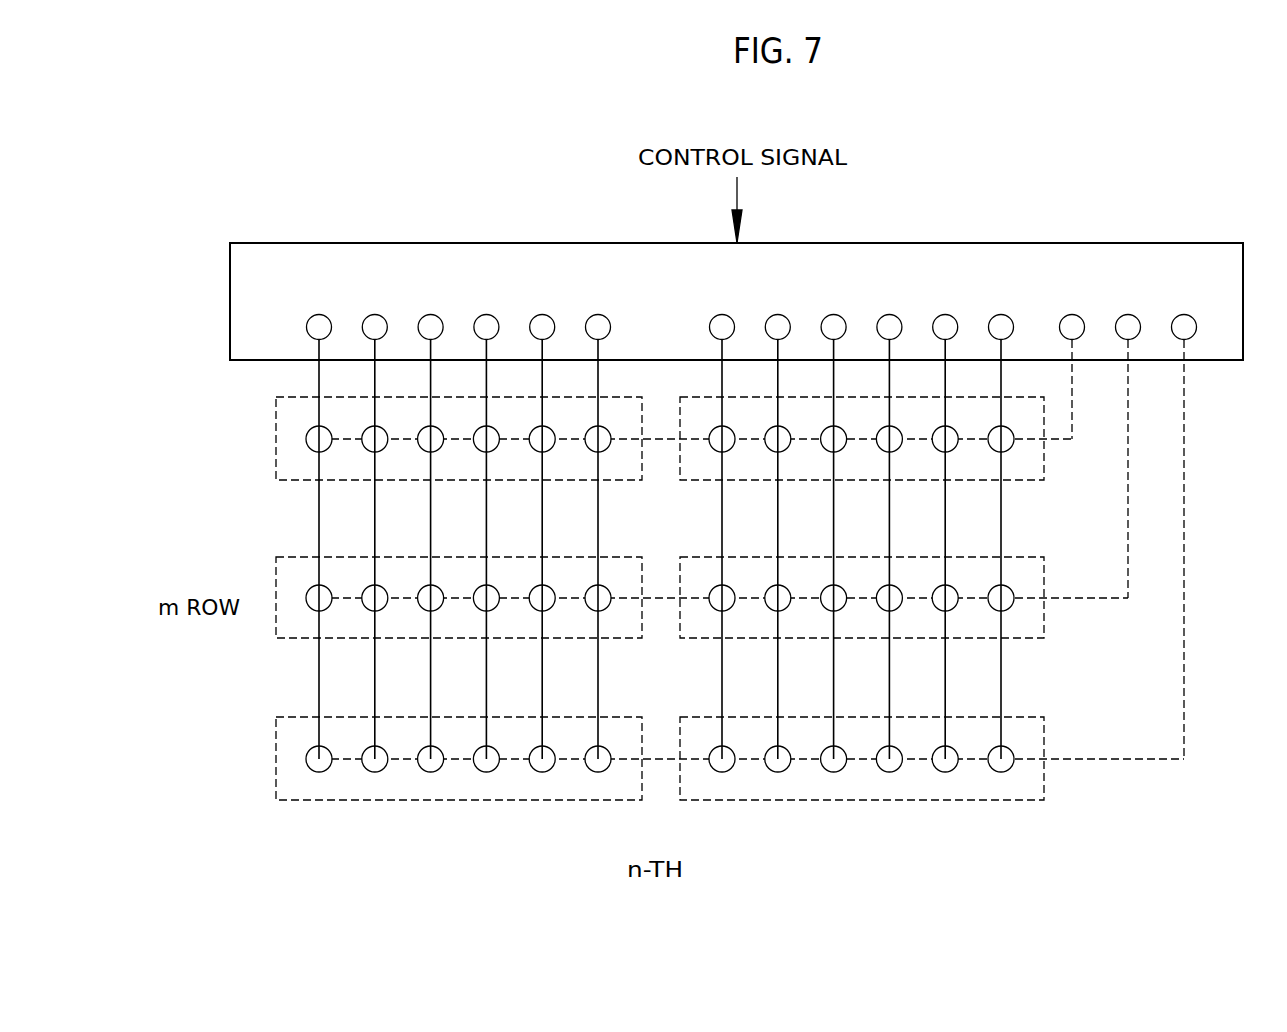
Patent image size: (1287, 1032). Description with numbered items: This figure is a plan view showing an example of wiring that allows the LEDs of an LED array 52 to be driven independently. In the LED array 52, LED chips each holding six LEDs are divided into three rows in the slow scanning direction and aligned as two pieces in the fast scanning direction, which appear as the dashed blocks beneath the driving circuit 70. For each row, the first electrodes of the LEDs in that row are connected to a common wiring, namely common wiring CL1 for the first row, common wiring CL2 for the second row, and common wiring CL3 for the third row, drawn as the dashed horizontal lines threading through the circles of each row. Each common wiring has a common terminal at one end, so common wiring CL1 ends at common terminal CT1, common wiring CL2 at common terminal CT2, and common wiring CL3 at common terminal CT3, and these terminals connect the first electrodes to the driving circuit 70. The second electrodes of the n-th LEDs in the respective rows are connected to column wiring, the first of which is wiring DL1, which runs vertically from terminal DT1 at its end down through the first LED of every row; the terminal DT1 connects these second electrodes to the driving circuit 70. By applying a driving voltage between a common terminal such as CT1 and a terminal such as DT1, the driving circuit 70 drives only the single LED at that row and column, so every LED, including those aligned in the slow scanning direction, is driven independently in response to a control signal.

The driving circuit 70 is at (486, 258).
The LED array 52 is at (998, 815).
The wiring DL1 is at (318, 375).
The terminal DT1 is at (320, 314).
The common terminal CT1 is at (1072, 314).
The common terminal CT2 is at (1128, 314).
The common terminal CT3 is at (1184, 314).
The common wiring CL1 is at (1067, 443).
The common wiring CL2 is at (1091, 603).
The common wiring CL3 is at (1138, 762).